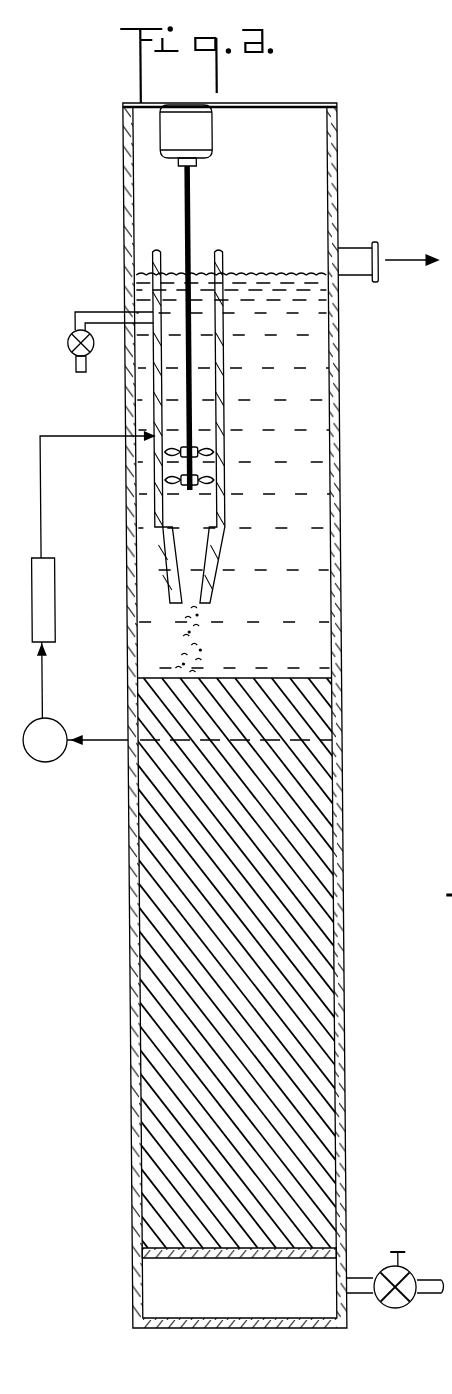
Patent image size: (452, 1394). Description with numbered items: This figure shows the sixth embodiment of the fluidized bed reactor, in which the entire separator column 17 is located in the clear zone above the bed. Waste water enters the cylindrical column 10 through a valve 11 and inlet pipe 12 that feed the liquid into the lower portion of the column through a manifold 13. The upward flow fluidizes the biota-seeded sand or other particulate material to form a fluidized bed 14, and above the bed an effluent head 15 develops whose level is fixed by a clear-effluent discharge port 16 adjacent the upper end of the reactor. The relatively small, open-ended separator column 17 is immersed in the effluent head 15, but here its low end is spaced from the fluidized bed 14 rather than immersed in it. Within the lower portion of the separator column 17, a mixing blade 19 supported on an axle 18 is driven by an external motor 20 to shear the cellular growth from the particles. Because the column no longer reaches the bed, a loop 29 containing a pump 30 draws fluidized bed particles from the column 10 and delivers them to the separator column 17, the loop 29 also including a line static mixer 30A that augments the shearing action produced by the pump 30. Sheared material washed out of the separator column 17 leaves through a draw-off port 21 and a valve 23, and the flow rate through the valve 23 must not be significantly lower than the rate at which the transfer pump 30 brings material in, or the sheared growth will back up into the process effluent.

The cylindrical column 10 is at (334, 443).
The valve 11 is at (381, 1306).
The inlet pipe 12 is at (355, 1283).
The manifold 13 is at (252, 1258).
The fluidized bed 14 is at (142, 947).
The effluent head 15 is at (283, 277).
The clear-effluent discharge port 16 is at (360, 272).
The separator column 17 is at (222, 262).
The axle 18 is at (190, 202).
The mixing blade 19 is at (183, 457).
The external motor 20 is at (204, 135).
The draw-off port 21 is at (100, 313).
The valve 23 is at (65, 343).
The loop 29 is at (42, 692).
The pump 30 is at (45, 762).
The line static mixer 30A is at (45, 590).